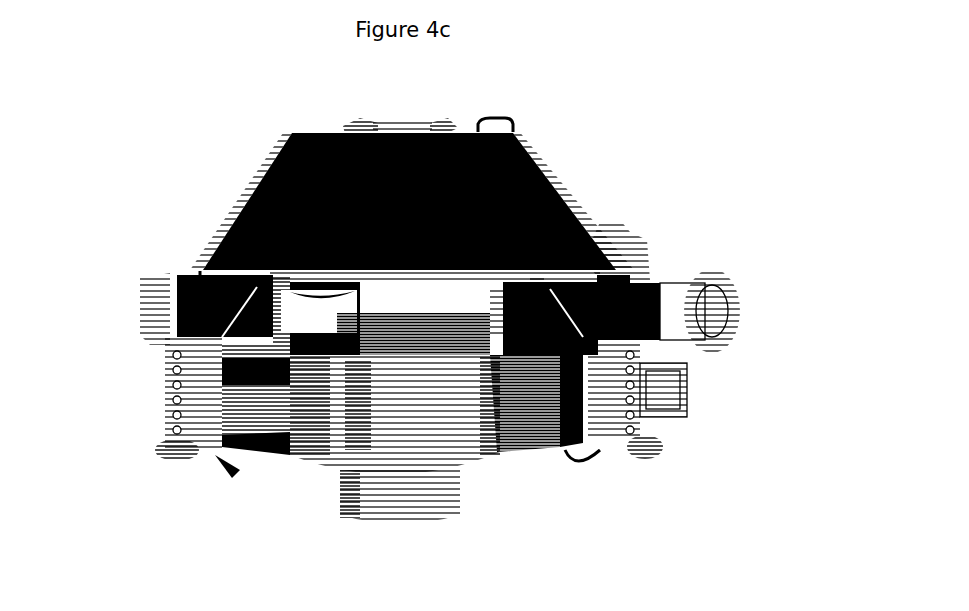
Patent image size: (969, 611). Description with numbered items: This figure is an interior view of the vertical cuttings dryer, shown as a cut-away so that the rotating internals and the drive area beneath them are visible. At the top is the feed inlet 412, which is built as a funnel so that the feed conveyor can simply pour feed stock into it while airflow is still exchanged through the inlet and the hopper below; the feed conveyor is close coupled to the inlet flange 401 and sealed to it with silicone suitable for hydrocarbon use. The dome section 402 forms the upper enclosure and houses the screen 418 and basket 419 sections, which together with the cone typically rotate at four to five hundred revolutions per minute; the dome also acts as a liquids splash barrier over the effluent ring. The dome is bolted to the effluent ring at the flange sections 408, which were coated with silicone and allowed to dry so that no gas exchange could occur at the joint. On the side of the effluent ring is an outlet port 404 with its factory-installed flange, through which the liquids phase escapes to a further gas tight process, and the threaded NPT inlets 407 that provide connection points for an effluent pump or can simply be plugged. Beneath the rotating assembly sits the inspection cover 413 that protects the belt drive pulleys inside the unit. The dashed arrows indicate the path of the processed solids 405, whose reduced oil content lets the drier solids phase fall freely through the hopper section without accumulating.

The inlet flange 401 is at (345, 120).
The dome section 402 is at (240, 200).
The outlet port 404 is at (703, 272).
The processed solids 405 is at (645, 312).
The NPT inlet 407 is at (195, 338).
The flange section 408 is at (198, 272).
The feed inlet 412 is at (410, 111).
The inspection cover 413 is at (343, 438).
The screen 418 is at (535, 163).
The basket 419 is at (562, 203).